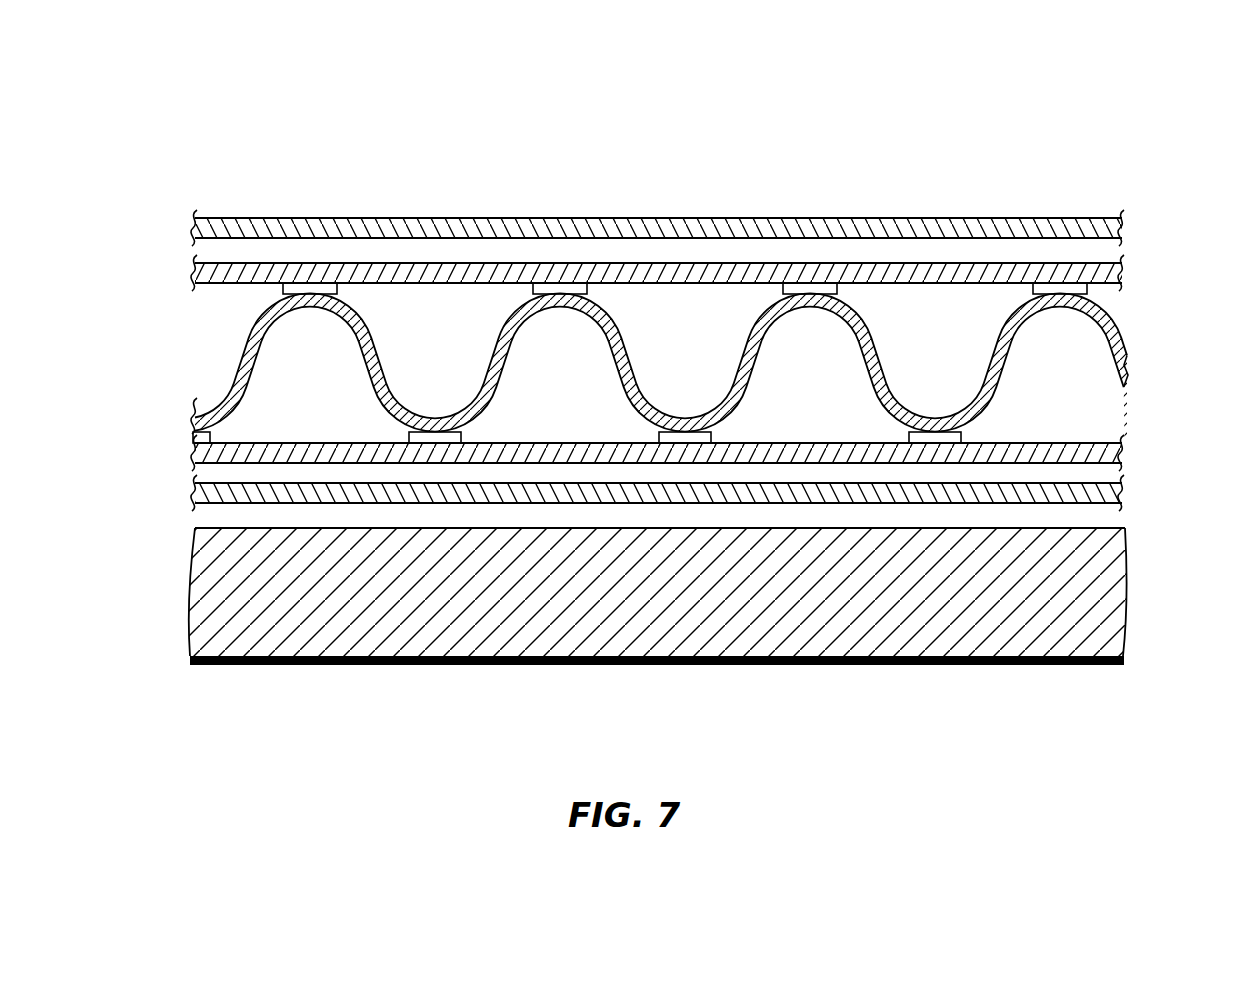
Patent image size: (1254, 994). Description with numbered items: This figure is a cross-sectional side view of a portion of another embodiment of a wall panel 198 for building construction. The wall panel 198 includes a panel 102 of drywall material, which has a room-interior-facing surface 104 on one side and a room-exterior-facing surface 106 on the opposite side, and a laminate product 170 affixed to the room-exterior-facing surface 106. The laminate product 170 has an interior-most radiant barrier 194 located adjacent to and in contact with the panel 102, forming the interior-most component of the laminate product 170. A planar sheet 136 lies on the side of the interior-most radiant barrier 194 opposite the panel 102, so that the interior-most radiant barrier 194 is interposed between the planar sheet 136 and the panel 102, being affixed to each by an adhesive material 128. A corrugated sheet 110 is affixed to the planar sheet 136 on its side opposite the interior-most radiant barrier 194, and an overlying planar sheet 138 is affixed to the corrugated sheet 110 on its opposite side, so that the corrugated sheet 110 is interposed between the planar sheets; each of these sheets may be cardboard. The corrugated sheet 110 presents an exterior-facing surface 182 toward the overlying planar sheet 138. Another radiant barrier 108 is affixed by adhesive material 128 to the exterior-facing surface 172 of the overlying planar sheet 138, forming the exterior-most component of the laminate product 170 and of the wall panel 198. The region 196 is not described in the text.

The panel of drywall material 102 is at (860, 632).
The room-interior-facing surface 104 is at (695, 673).
The room-exterior-facing surface 106 is at (619, 517).
The radiant barrier 108 is at (460, 228).
The corrugated sheet 110 is at (285, 306).
The adhesive material 128 is at (533, 291).
The planar sheet 136 is at (198, 452).
The overlying planar sheet 138 is at (628, 277).
The laminate product 170 is at (1036, 124).
The exterior-facing surface 172 is at (371, 246).
The exterior-facing surface 182 is at (668, 402).
The interior-most radiant barrier 194 is at (200, 496).
The gap 196 is at (214, 465).
The wall panel 198 is at (1152, 587).